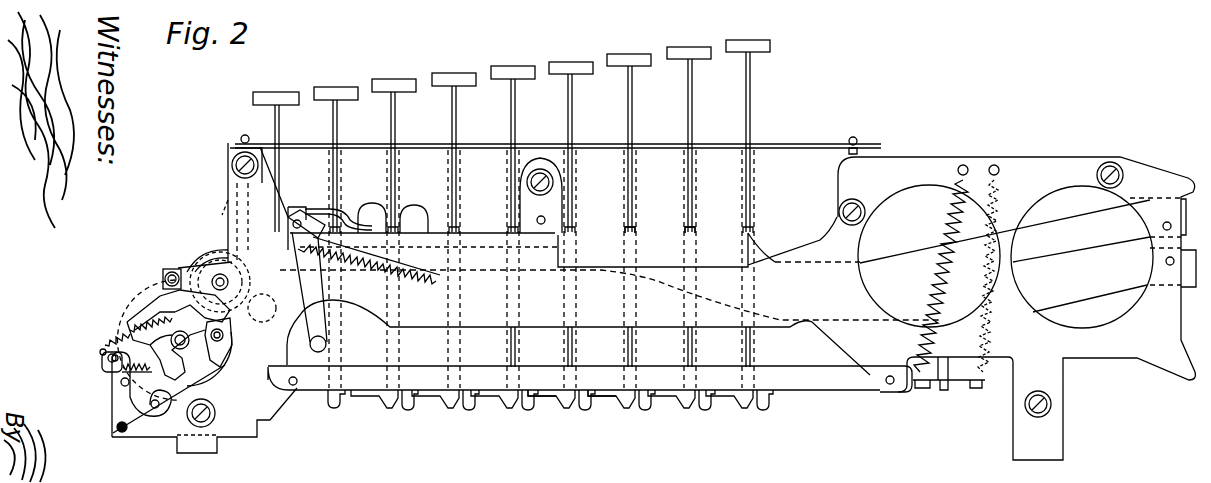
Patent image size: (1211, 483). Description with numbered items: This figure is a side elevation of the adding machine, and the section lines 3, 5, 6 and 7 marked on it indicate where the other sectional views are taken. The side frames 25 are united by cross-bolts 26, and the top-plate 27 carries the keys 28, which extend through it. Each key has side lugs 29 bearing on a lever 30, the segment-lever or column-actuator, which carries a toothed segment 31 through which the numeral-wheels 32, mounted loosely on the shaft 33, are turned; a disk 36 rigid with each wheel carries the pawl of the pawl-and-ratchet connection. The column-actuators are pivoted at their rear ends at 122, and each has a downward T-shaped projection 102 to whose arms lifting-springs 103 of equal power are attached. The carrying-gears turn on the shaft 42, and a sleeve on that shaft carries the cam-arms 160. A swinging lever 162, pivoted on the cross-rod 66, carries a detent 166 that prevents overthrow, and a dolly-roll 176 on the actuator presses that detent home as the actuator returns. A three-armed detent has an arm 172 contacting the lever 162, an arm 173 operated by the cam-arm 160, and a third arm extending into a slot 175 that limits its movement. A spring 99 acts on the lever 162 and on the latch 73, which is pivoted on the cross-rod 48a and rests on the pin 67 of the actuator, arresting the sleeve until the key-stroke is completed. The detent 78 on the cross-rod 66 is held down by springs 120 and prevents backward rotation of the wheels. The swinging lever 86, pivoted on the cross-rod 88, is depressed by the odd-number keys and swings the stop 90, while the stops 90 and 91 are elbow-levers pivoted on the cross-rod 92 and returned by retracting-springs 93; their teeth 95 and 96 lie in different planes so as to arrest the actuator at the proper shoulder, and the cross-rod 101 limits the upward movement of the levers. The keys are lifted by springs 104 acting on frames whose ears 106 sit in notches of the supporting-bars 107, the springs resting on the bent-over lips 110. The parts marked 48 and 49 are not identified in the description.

The section line 3 3 is at (240, 143).
The section line 5 5 is at (130, 398).
The section line 6 6 is at (220, 475).
The section line 7 7 is at (300, 468).
The side frames 25 is at (610, 296).
The cross-bolts 26 is at (232, 163).
The top-plate 27 is at (793, 145).
The keys 28 is at (511, 112).
The side lugs 29 is at (690, 227).
The levers 30 is at (532, 250).
The toothed segments 31 is at (218, 212).
The numeral-wheels 32 is at (196, 263).
The shaft 33 is at (208, 272).
The disk 36 is at (213, 313).
The shaft 42 is at (181, 349).
The spring 48 is at (130, 374).
The cross-rod 48a is at (124, 366).
The pin 49 is at (152, 408).
The cross-rod 66 is at (163, 276).
The pin 67 is at (230, 338).
The latch 73 is at (104, 359).
The detent 78 is at (205, 252).
The swinging lever 86 is at (1017, 308).
The cross-rod 88 is at (1167, 223).
The stop 90 is at (350, 212).
The stop 91 is at (413, 210).
The cross-rod 92 is at (298, 218).
The retracting-spring 93 is at (378, 280).
The tooth 95 is at (332, 348).
The tooth 96 is at (296, 386).
The spring 99 is at (102, 352).
The cross-rod 101 is at (546, 220).
The downward projection 102 is at (955, 380).
The lifting-spring 103 is at (960, 373).
The springs 104 is at (548, 405).
The ears 106 is at (404, 402).
The supporting-bars 107 is at (604, 388).
The bent-over lips 110 is at (448, 402).
The springs 120 is at (165, 290).
The pivot 122 is at (1170, 266).
The cam-arms 160 is at (217, 372).
The swinging lever 162 is at (150, 305).
The detent 166 is at (265, 308).
The arm 172 is at (130, 336).
The arm 173 is at (130, 326).
The slot 175 is at (112, 407).
The dolly-roll 176 is at (239, 282).